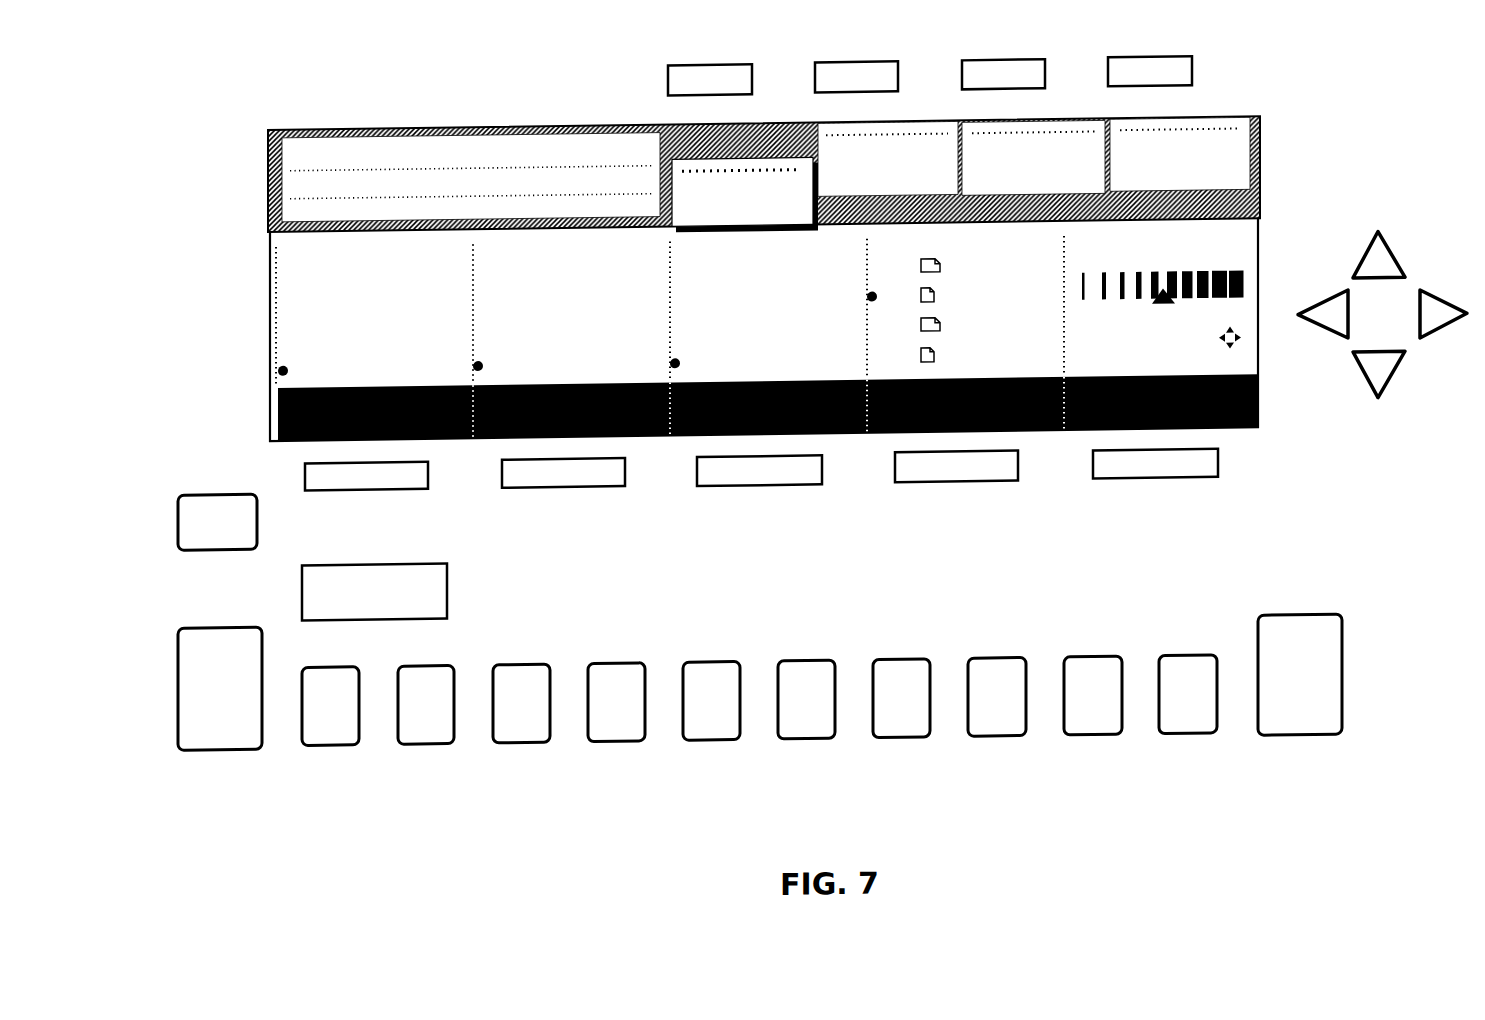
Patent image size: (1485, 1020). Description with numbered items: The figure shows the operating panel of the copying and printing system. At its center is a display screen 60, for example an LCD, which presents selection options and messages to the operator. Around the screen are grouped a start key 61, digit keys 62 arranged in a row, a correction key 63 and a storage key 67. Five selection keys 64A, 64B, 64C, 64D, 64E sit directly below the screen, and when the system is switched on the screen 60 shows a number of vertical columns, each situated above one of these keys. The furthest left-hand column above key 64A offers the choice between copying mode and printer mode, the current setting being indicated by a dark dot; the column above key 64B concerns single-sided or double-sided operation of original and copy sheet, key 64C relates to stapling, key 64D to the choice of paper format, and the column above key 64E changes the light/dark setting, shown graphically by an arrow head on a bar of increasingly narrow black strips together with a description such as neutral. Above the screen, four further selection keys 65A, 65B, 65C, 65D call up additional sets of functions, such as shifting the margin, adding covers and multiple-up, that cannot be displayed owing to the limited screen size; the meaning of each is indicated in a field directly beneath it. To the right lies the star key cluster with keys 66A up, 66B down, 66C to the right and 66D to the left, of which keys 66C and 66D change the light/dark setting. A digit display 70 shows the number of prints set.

The display screen 60 is at (268, 237).
The start key 61 is at (202, 627).
The digit keys 62 is at (797, 623).
The correction key 63 is at (1278, 629).
The selection key 64A is at (338, 491).
The selection key 64B is at (550, 491).
The selection key 64C is at (736, 492).
The selection key 64D is at (933, 491).
The selection key 64E is at (1133, 490).
The selection key 65A is at (692, 71).
The selection key 65B is at (838, 70).
The selection key 65C is at (983, 70).
The selection key 65D is at (1138, 69).
The star key cluster up key 66A is at (1392, 263).
The star key cluster down key 66B is at (1395, 381).
The star key cluster right key 66C is at (1437, 316).
The star key cluster left key 66D is at (1320, 350).
The storage key 67 is at (192, 494).
The digit display 70 is at (449, 601).